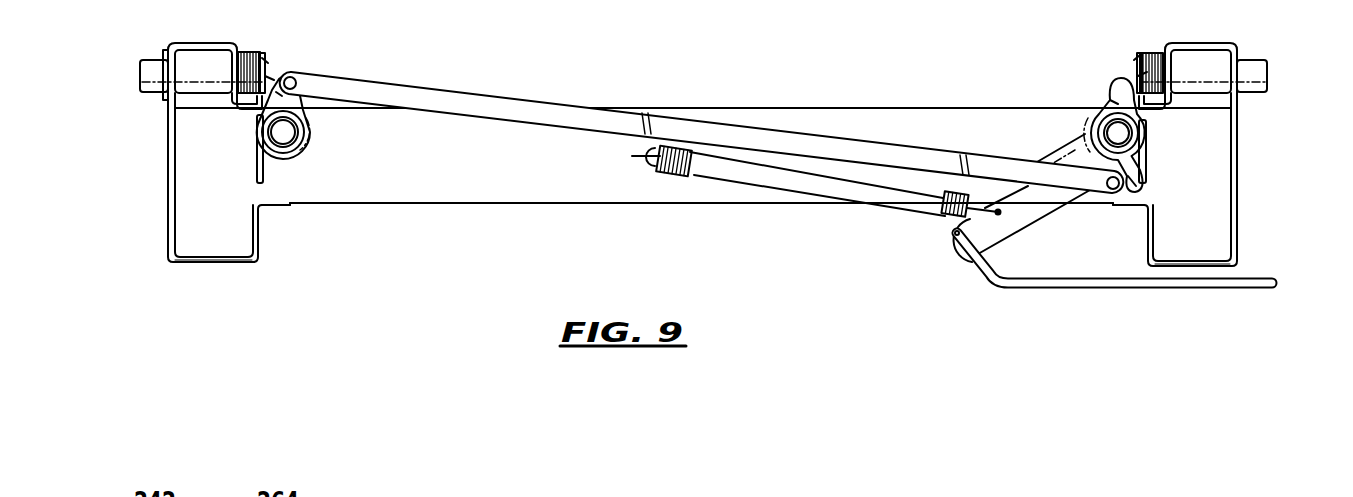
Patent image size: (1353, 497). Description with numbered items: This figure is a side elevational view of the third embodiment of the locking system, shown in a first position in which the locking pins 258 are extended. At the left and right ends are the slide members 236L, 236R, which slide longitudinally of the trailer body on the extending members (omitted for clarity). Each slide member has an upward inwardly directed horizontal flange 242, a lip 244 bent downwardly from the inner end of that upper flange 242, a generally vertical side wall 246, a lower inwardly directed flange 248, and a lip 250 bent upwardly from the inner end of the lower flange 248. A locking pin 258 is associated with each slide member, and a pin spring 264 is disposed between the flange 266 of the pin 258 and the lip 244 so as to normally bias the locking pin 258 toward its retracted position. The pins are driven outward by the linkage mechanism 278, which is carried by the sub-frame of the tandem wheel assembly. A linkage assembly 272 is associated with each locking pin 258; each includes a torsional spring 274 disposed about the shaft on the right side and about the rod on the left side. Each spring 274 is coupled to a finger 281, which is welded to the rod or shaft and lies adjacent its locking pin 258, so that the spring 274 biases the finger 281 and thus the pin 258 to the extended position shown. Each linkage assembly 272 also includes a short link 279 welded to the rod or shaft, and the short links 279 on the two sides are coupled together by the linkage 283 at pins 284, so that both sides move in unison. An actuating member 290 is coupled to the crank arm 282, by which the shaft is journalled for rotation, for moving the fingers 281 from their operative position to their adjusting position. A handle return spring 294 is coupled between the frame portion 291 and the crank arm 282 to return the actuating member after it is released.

The slide member 236L is at (162, 250).
The slide member 236R is at (1248, 236).
The upper horizontal flange 242 is at (223, 43).
The lip 244 is at (250, 52).
The vertical side wall 246 is at (170, 172).
The lower flange 248 is at (221, 263).
The lip 250 is at (282, 206).
The locking pin 258 is at (156, 60).
The pin spring 264 is at (272, 76).
The flange 266 is at (265, 58).
The linkage assembly 272 is at (246, 116).
The torsional spring 274 is at (265, 176).
The linkage mechanism 278 is at (1165, 128).
The short link 279 is at (305, 94).
The finger 281 is at (300, 100).
The crank arm 282 is at (1055, 157).
The linkage 283 is at (538, 107).
The pin 284 is at (1103, 197).
The actuating member 290 is at (1048, 285).
The frame portion 291 is at (542, 176).
The handle return spring 294 is at (940, 211).